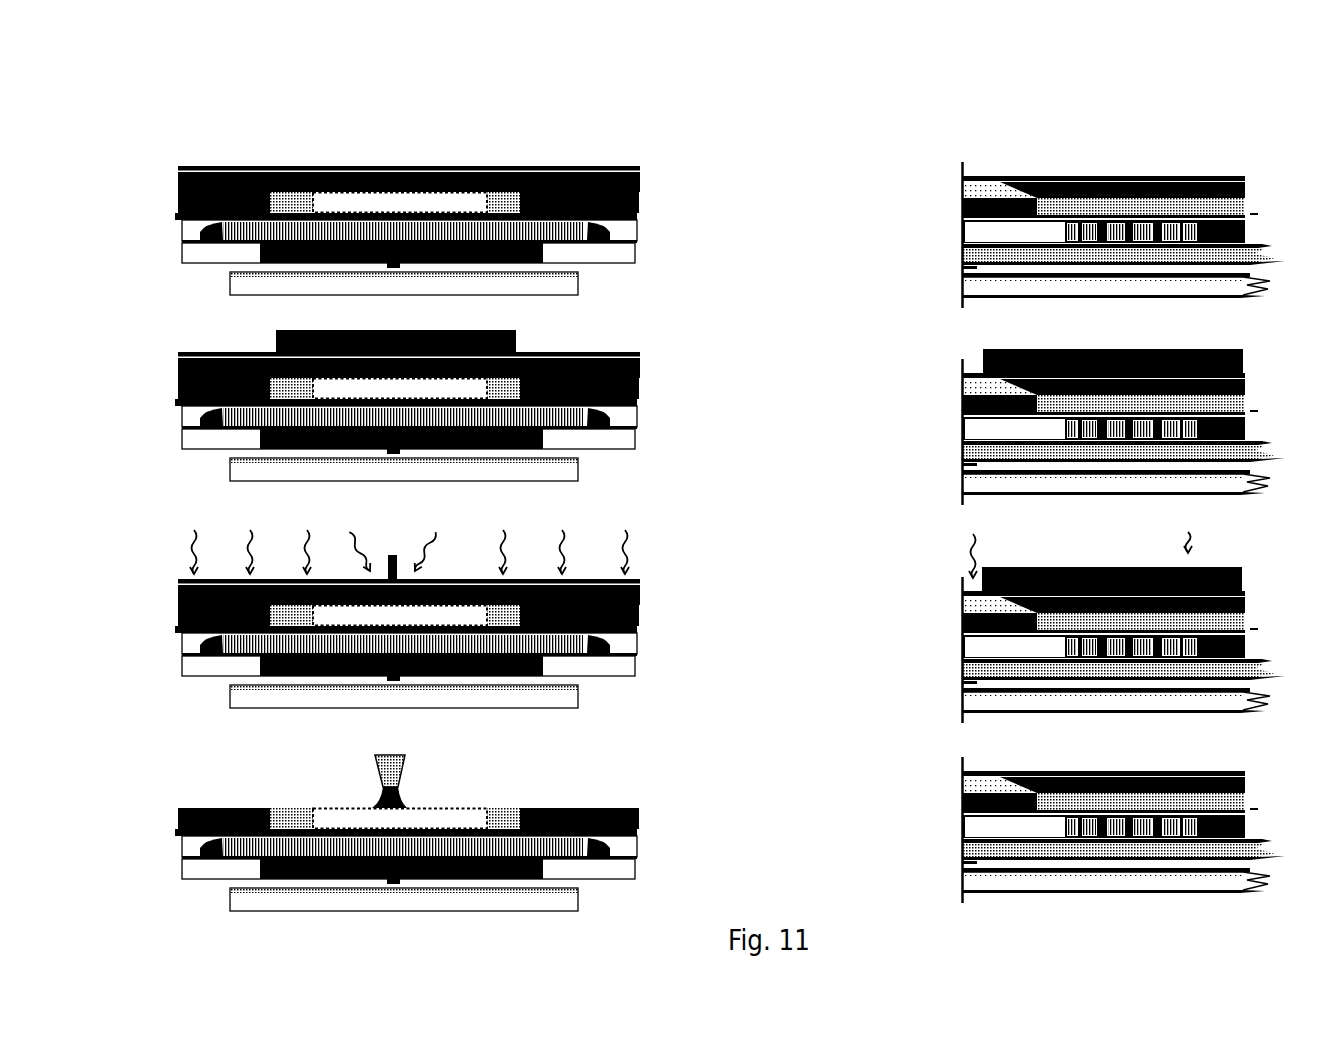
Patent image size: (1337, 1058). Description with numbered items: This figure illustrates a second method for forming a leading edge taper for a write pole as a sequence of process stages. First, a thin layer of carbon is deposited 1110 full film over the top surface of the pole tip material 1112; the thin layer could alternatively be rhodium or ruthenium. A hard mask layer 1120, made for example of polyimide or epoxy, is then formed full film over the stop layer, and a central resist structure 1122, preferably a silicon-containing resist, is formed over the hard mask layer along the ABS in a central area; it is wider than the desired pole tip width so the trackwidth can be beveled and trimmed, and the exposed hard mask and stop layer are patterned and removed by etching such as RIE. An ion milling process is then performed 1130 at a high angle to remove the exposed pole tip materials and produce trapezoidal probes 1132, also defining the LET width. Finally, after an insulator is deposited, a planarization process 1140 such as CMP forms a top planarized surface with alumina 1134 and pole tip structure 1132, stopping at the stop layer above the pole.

The deposition of thin carbon layer 1110 is at (730, 172).
The pole tip material 1112 is at (640, 187).
The hard mask layer 1120 is at (227, 358).
The central resist structure 1122 is at (759, 331).
The ion milling process 1130 is at (225, 528).
The trapezoidal probe (pole tip structure) 1132 is at (400, 790).
The alumina 1134 is at (373, 770).
The planarization process 1140 is at (252, 796).